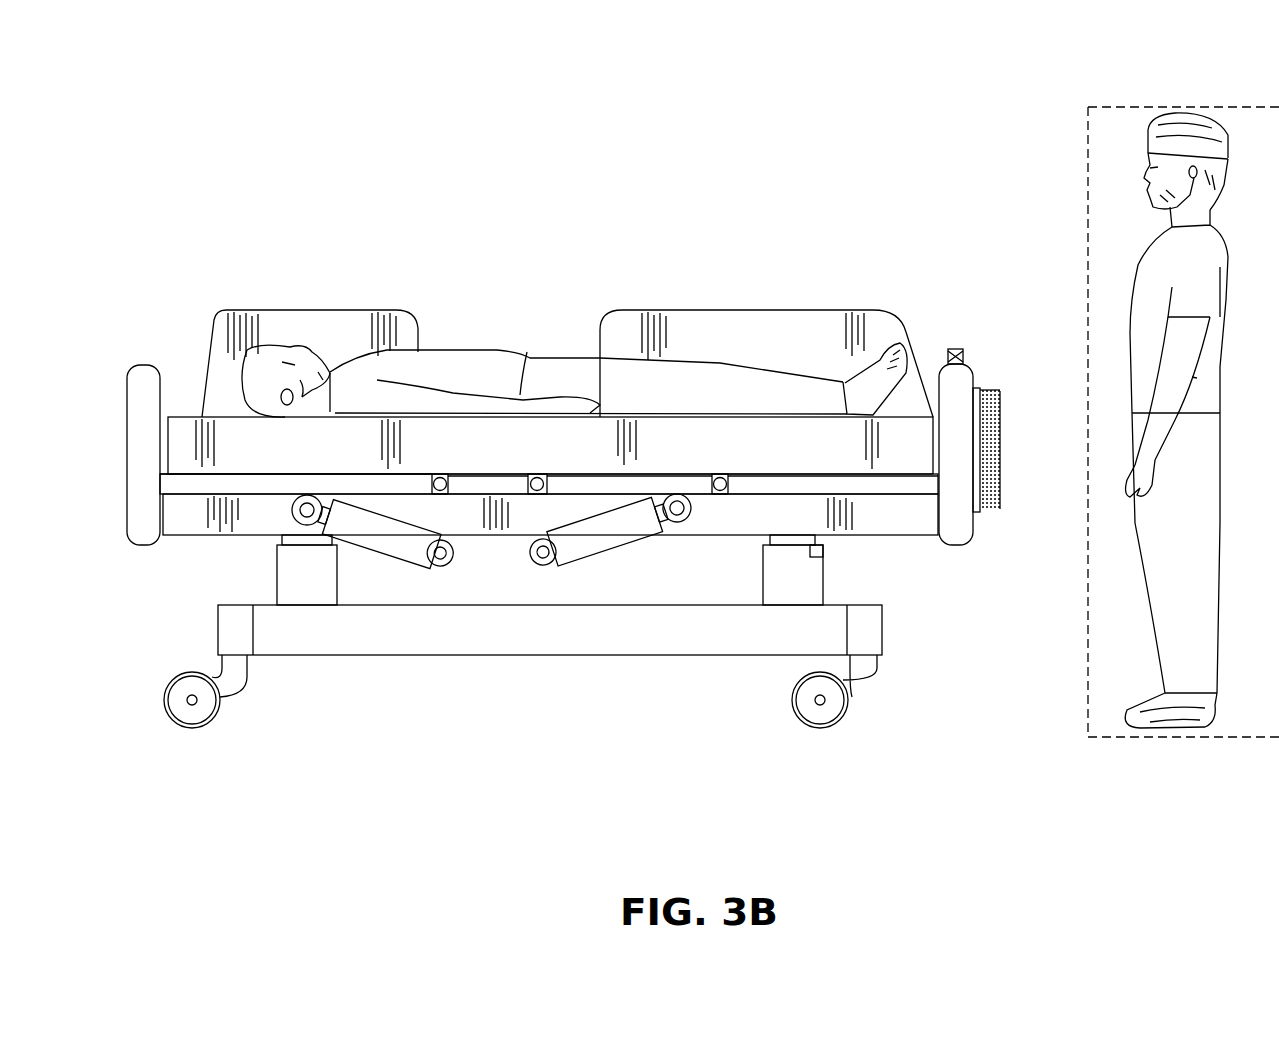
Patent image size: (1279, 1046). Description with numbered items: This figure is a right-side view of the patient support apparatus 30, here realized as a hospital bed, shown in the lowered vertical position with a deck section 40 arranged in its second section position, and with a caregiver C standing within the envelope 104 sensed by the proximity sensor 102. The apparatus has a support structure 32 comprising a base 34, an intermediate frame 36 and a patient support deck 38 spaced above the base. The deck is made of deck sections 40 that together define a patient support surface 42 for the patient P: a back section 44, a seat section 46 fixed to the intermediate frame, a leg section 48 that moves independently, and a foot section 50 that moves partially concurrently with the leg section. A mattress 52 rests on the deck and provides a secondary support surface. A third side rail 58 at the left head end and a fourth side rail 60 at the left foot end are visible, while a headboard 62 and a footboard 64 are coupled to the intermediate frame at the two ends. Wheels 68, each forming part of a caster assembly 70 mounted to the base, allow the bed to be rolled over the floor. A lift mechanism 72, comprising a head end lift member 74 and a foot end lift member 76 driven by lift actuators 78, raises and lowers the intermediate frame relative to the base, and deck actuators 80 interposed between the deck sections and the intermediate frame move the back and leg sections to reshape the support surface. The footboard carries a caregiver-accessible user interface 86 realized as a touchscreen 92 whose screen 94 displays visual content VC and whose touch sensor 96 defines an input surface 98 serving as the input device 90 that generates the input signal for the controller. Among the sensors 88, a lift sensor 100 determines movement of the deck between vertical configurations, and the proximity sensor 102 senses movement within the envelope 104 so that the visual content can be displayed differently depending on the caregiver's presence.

The patient support apparatus 30 is at (176, 62).
The support structure 32 is at (228, 580).
The base 34 is at (538, 657).
The intermediate frame 36 is at (292, 488).
The patient support deck 38 is at (520, 470).
The deck section 40 is at (516, 432).
The patient support surface 42 is at (210, 473).
The back section 44 is at (192, 485).
The seat section 46 is at (495, 488).
The leg section 48 is at (558, 488).
The foot section 50 is at (900, 485).
The mattress 52 is at (806, 459).
The third side rail 58 is at (350, 309).
The fourth side rail 60 is at (802, 310).
The headboard 62 is at (140, 548).
The footboard 64 is at (958, 548).
The wheels 68 is at (215, 715).
The caster assembly 70 is at (158, 698).
The lift mechanism 72 is at (340, 580).
The head end lift member 74 is at (322, 586).
The foot end lift member 76 is at (808, 586).
The lift actuators 78 is at (285, 540).
The deck actuators 80 is at (410, 528).
The user interface 86 is at (1016, 520).
The sensors 88 is at (891, 433).
The input device 90 is at (1003, 308).
The touchscreen 92 is at (985, 395).
The screen 94 is at (982, 516).
The touch sensor 96 is at (1040, 388).
The input surface 98 is at (1000, 445).
The lift sensor 100 is at (822, 553).
The proximity sensor 102 is at (954, 344).
The envelope 104 is at (1190, 103).
The patient P is at (453, 376).
The caregiver C is at (1192, 266).
The visual content VC is at (984, 497).